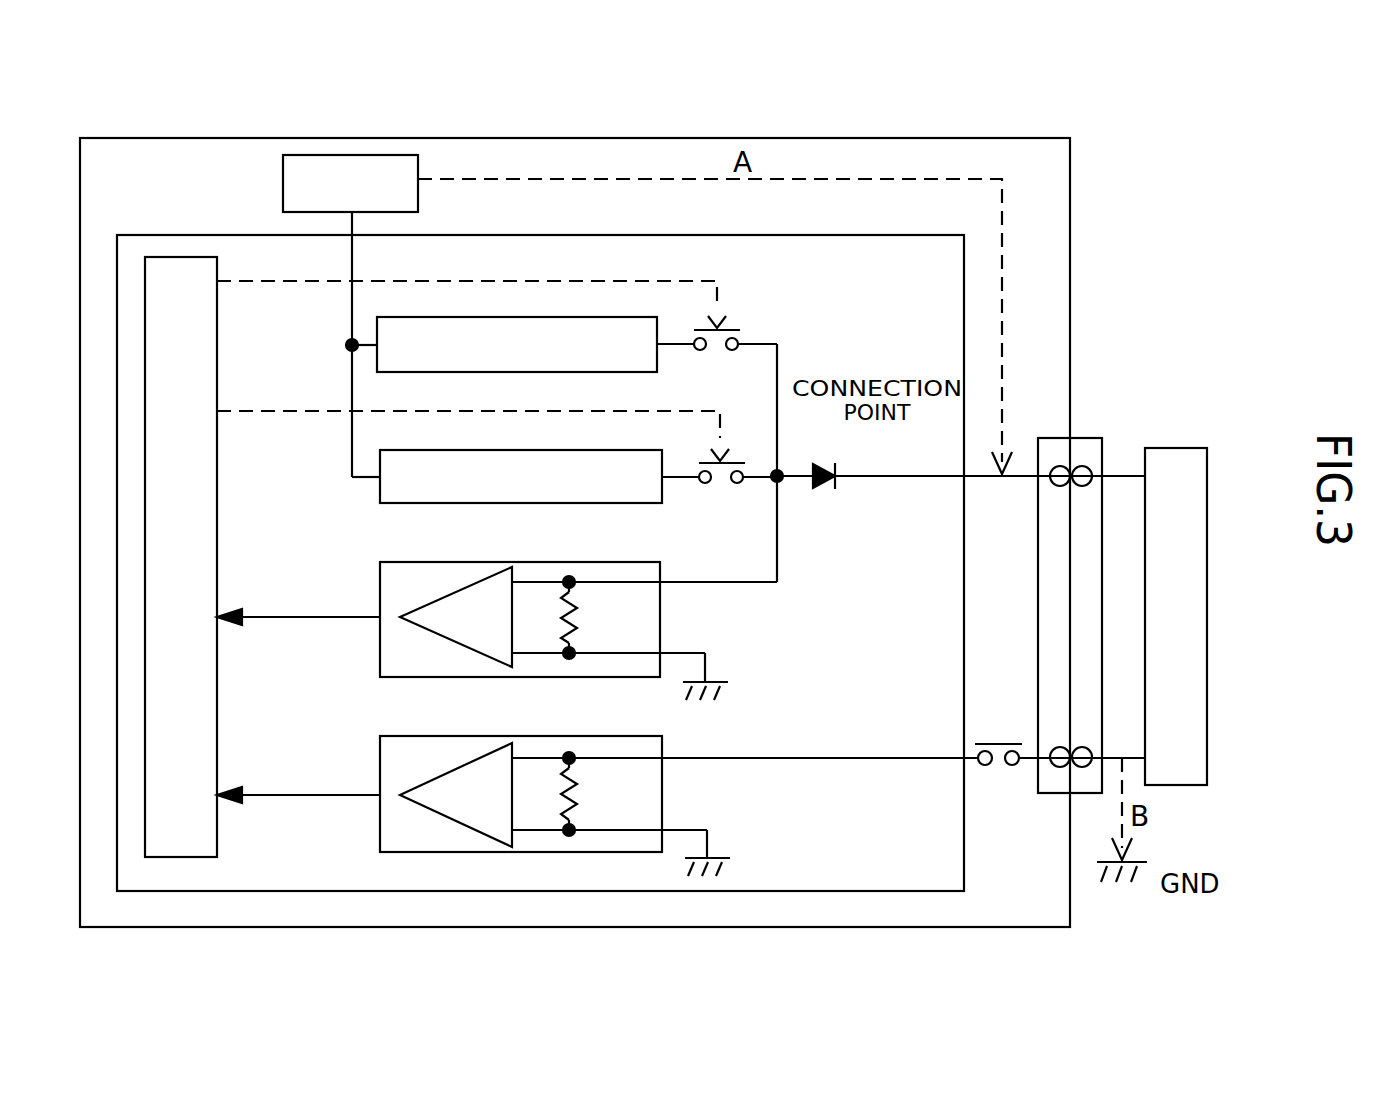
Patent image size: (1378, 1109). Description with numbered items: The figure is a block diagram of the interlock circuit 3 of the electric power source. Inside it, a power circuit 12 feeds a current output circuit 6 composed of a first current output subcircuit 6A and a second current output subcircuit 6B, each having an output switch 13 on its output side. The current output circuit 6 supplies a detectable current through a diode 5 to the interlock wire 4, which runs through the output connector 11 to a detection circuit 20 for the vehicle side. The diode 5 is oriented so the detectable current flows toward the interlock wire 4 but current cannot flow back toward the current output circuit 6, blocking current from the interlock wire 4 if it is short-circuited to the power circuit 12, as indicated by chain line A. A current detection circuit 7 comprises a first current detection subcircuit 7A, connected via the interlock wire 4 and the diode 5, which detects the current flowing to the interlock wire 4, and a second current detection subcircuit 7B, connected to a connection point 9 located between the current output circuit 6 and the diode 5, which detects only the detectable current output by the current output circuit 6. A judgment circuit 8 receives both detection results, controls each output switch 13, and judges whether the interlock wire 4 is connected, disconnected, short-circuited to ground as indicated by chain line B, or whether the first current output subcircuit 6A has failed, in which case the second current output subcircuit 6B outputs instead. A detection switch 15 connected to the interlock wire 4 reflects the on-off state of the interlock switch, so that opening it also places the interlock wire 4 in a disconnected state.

The interlock circuit 3 is at (817, 891).
The interlock wire 4 is at (1015, 475).
The diode 5 is at (828, 461).
The current output circuit 6 is at (720, 301).
The first current output subcircuit 6A is at (607, 450).
The second current output subcircuit 6B is at (657, 355).
The current detection circuit 7 is at (651, 671).
The first current detection subcircuit 7A is at (662, 740).
The second current detection subcircuit 7B is at (660, 597).
The judgment circuit 8 is at (217, 566).
The connection point 9 is at (787, 471).
The output connector 11 is at (1073, 438).
The power circuit 12 is at (283, 178).
The output switch 13 is at (689, 318).
The detection switch 15 is at (997, 732).
The detection circuit for the vehicle side 20 is at (1165, 448).